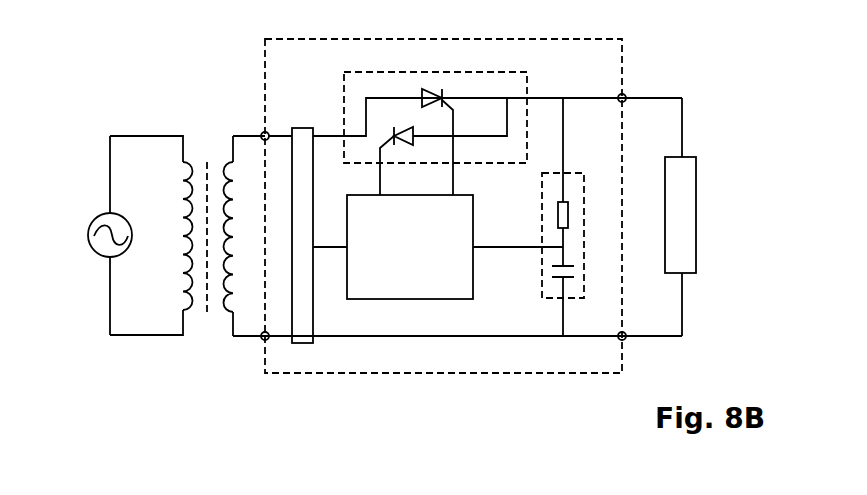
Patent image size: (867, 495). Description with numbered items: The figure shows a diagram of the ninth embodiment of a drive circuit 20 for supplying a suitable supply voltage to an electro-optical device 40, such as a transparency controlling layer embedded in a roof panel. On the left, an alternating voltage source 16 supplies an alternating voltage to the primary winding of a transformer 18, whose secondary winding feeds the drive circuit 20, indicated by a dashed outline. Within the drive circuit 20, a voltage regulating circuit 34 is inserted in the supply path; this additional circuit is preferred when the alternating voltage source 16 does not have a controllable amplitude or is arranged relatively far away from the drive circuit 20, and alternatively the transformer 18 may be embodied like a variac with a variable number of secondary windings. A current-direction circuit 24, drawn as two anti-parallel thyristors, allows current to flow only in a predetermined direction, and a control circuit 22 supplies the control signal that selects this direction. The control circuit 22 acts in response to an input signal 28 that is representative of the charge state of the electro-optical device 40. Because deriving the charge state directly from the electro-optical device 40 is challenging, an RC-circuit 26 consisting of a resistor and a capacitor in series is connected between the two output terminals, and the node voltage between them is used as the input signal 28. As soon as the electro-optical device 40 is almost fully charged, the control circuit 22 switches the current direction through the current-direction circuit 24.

The alternating voltage source 16 is at (92, 250).
The transformer 18 is at (200, 332).
The drive circuit 20 is at (622, 60).
The control circuit 22 is at (393, 247).
The current-direction circuit 24 is at (527, 80).
The RC-circuit 26 is at (570, 298).
The input signal 28 is at (500, 247).
The voltage regulating circuit 34 is at (298, 317).
The electro-optical device 40 is at (686, 195).